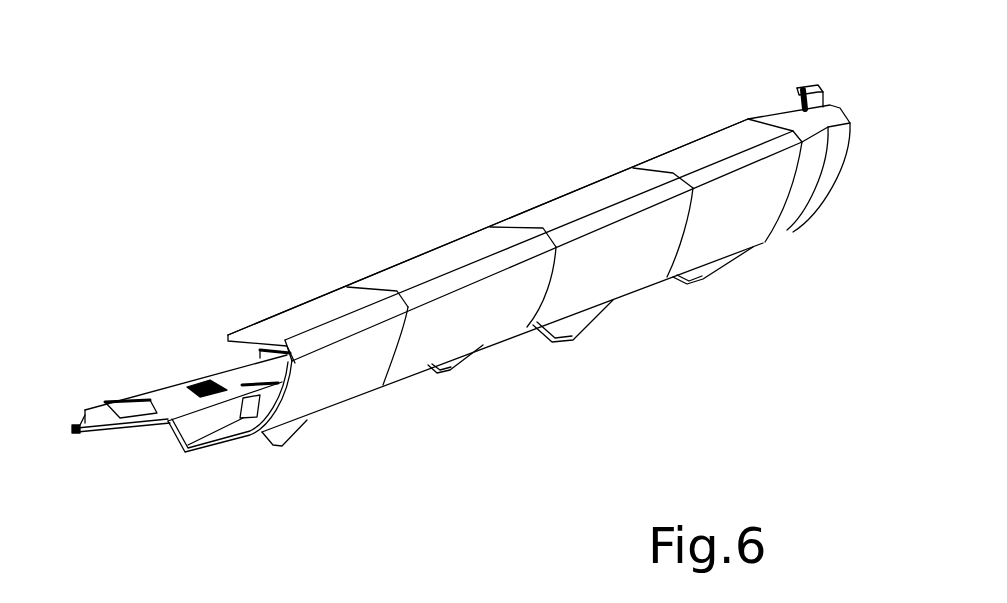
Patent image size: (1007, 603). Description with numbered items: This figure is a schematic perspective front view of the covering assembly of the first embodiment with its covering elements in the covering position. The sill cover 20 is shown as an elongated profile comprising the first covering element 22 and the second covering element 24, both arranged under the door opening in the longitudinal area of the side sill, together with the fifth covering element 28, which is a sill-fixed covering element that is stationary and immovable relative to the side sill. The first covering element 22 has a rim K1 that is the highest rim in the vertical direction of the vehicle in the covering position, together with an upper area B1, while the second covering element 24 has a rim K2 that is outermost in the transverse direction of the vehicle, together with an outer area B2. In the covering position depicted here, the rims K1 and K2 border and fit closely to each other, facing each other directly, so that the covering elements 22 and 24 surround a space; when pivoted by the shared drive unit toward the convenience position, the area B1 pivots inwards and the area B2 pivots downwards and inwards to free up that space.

The sill cover 20 is at (824, 107).
The first covering element 22 is at (485, 327).
The second covering element 24 is at (388, 272).
The fifth covering element 28 is at (217, 445).
The area of the first covering element B1 is at (526, 259).
The area of the second covering element B2 is at (460, 241).
The rim K1 is at (490, 227).
The rim K2 is at (433, 284).